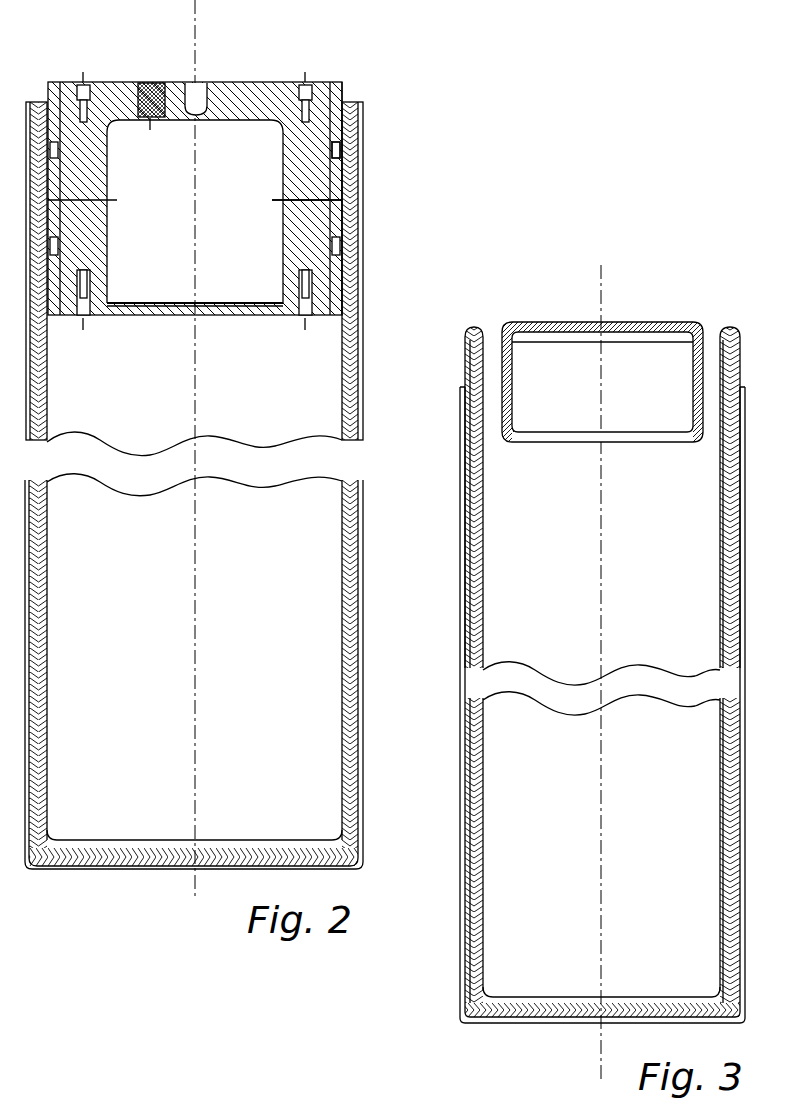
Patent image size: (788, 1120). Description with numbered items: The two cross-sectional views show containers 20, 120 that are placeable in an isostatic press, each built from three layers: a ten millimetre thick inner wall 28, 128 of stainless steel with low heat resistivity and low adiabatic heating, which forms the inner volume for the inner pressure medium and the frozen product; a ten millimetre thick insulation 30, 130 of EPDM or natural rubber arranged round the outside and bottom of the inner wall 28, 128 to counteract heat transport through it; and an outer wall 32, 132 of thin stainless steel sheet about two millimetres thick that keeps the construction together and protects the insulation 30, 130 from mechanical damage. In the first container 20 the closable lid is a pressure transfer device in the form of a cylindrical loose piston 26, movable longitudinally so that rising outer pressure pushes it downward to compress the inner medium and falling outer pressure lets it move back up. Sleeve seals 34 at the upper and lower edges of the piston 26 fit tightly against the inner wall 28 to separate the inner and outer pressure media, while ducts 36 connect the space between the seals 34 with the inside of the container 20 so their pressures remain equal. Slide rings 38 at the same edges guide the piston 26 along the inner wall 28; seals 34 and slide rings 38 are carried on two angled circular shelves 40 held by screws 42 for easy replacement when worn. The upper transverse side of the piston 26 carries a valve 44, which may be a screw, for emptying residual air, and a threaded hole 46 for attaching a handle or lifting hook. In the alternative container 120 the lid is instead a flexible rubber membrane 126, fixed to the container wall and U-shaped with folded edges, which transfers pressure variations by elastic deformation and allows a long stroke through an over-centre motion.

In FIG. 2, the container 20 is at (183, 488).
In FIG. 2, the loose piston 26 is at (254, 95).
In FIG. 2, the inner wall 28 is at (44, 730).
In FIG. 2, the insulation 30 is at (30, 778).
In FIG. 2, the outer wall 32 is at (23, 808).
In FIG. 2, the seals 34 is at (350, 150).
In FIG. 2, the ducts 36 is at (352, 199).
In FIG. 2, the slide rings 38 is at (344, 95).
In FIG. 2, the angled circular shelves 40 is at (62, 82).
In FIG. 2, the screws 42 is at (306, 84).
In FIG. 2, the valve 44 is at (150, 82).
In FIG. 2, the threaded hole 46 is at (198, 92).
In FIG. 3, the container 120 is at (581, 648).
In FIG. 3, the membrane 126 is at (644, 321).
In FIG. 3, the inner wall 128 is at (483, 520).
In FIG. 3, the insulation 130 is at (472, 560).
In FIG. 3, the outer wall 132 is at (460, 907).